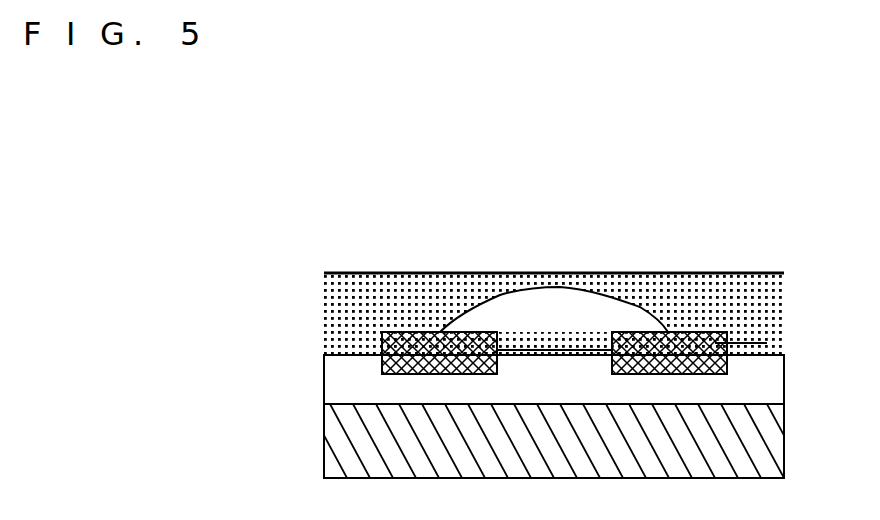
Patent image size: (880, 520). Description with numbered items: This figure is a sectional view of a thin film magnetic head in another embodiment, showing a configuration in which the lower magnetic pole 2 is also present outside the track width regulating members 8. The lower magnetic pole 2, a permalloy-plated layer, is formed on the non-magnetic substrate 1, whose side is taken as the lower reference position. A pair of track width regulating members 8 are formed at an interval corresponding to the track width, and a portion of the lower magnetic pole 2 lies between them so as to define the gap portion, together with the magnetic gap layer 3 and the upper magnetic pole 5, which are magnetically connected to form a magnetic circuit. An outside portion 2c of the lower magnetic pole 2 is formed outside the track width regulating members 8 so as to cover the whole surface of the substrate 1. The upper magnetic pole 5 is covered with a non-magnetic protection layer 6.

The non-magnetic substrate 1 is at (753, 450).
The lower magnetic pole 2 is at (753, 387).
The outside portion of the lower magnetic pole 2c is at (345, 363).
The magnetic gap layer 3 is at (543, 348).
The upper magnetic pole 5 is at (586, 323).
The non-magnetic protection layer 6 is at (732, 290).
The track width regulating members 8 is at (722, 347).